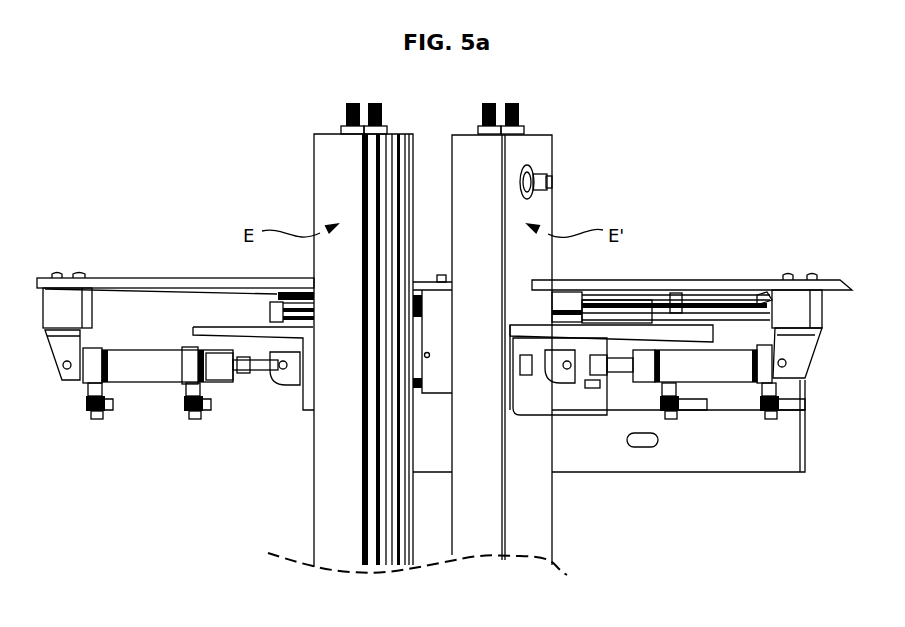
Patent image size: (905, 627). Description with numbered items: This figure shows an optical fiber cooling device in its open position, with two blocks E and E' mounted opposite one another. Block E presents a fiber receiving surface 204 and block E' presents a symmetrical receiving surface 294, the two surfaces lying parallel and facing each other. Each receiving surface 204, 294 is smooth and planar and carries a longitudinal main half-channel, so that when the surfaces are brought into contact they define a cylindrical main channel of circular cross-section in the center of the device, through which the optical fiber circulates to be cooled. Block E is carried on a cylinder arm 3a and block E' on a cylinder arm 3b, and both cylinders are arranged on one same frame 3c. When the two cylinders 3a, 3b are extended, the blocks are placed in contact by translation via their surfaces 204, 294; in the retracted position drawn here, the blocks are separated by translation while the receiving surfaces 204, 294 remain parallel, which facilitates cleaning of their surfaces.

The fiber receiving surface 204 is at (388, 170).
The receiving surface 294 is at (452, 185).
The cylinder arm 3a is at (140, 367).
The cylinder arm 3b is at (730, 366).
The frame 3c is at (603, 447).